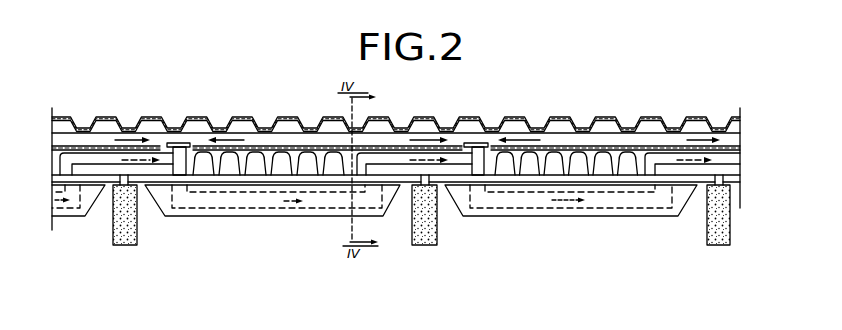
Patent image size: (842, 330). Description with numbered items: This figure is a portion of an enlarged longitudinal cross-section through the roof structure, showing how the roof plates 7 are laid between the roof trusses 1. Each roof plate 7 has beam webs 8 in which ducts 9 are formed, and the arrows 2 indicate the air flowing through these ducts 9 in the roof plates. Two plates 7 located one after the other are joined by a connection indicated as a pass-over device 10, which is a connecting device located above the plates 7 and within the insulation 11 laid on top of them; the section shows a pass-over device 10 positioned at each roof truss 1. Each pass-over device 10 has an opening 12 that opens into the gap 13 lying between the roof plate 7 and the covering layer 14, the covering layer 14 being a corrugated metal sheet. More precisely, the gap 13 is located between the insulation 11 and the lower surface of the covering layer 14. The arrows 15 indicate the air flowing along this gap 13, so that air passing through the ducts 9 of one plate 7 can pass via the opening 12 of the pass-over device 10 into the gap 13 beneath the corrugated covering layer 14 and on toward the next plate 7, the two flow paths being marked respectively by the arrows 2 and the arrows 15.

The roof truss 1 is at (137, 228).
The arrows 2 is at (403, 150).
The roof plate 7 is at (207, 180).
The beam web 8 is at (242, 212).
The duct 9 is at (262, 202).
The pass-over device 10 is at (466, 144).
The insulation 11 is at (279, 152).
The opening 12 is at (190, 147).
The gap 13 is at (603, 138).
The covering layer 14 is at (191, 118).
The arrows 15 is at (233, 141).